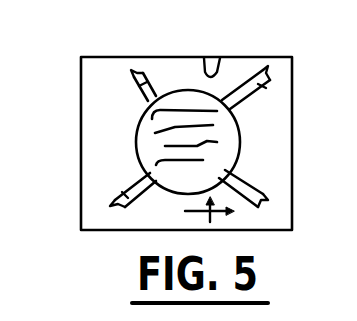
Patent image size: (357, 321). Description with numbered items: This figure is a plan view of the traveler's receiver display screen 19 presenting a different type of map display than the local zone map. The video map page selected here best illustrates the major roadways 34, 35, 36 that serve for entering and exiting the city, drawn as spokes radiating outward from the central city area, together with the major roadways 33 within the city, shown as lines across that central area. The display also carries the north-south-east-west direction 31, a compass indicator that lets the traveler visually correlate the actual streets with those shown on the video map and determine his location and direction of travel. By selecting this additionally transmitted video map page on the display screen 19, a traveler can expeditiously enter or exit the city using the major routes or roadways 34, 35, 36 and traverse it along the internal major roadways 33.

The display screen 19 is at (220, 58).
The north-south-east-west direction 31 is at (212, 222).
The major roadways within the city 33 is at (152, 145).
The major roadway 34 is at (147, 92).
The major roadway 35 is at (258, 82).
The major roadway 36 is at (127, 206).